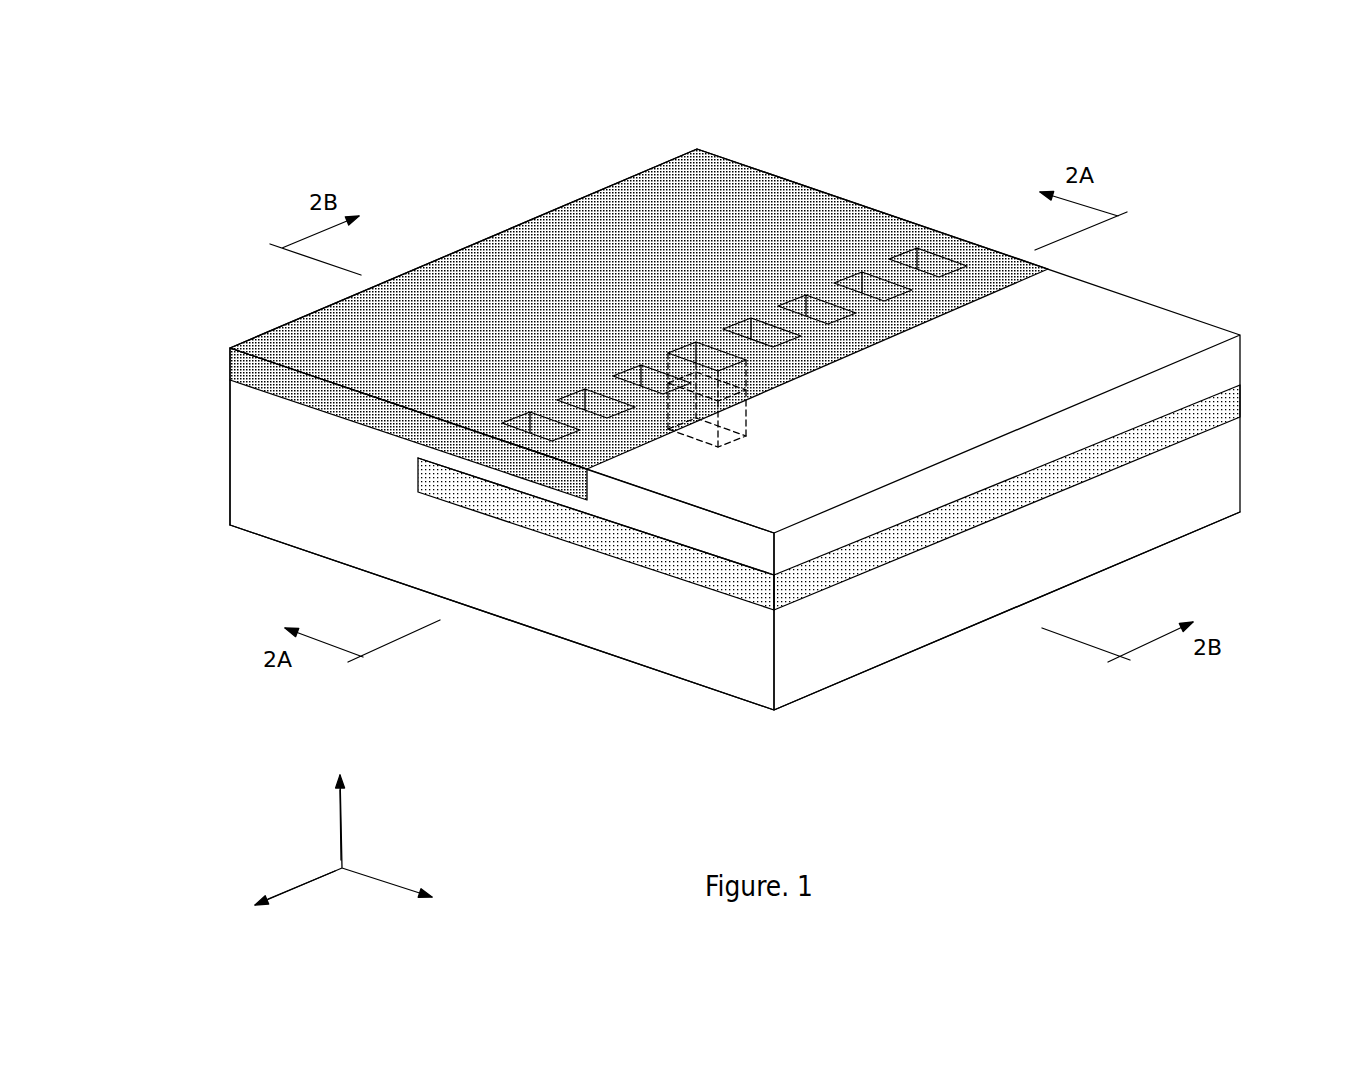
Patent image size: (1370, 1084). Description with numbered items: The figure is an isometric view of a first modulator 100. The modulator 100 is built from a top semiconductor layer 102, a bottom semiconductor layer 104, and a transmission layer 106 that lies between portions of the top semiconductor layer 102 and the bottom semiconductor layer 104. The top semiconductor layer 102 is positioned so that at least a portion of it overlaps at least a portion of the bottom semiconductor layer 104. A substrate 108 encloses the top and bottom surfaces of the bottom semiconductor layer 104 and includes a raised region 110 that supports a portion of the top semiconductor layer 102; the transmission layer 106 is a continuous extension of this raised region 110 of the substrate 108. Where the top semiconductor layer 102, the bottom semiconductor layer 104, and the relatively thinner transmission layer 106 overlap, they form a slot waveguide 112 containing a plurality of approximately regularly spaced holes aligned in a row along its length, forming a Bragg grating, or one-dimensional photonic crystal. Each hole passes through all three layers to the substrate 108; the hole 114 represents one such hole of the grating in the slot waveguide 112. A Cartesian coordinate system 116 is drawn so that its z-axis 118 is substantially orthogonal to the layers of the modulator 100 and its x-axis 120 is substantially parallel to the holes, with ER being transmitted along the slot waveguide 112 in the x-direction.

The modulator 100 is at (1175, 100).
The top semiconductor layer 102 is at (782, 177).
The bottom semiconductor layer 104 is at (1240, 392).
The transmission layer 106 is at (481, 474).
The substrate 108 is at (822, 667).
The raised region 110 is at (303, 432).
The slot waveguide 112 is at (962, 198).
The hole 114 is at (758, 373).
The Cartesian coordinate system 116 is at (405, 820).
The z-axis 118 is at (338, 807).
The x-axis 120 is at (288, 893).